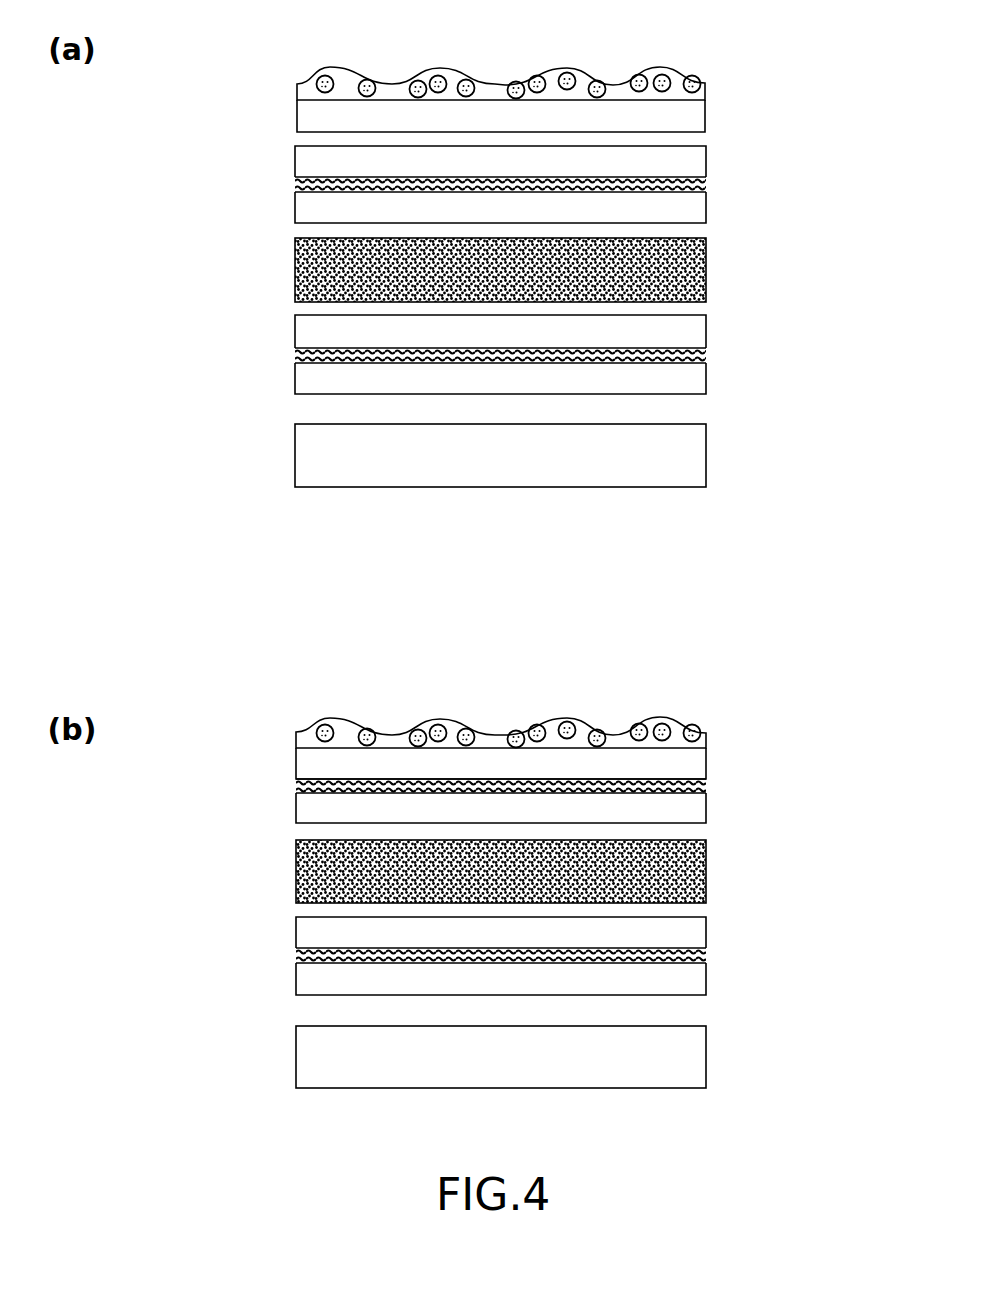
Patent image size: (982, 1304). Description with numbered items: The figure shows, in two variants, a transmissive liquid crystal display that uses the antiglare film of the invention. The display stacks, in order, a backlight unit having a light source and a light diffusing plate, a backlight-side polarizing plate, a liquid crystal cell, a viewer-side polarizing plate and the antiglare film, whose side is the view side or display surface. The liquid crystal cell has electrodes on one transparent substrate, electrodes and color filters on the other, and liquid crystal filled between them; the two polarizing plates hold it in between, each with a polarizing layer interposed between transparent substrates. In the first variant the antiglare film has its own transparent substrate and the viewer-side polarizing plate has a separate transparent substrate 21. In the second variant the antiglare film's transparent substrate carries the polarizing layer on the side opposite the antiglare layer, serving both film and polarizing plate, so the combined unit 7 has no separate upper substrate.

The combined surface laminate 7 is at (533, 785).
The transparent substrate 21 is at (312, 162).